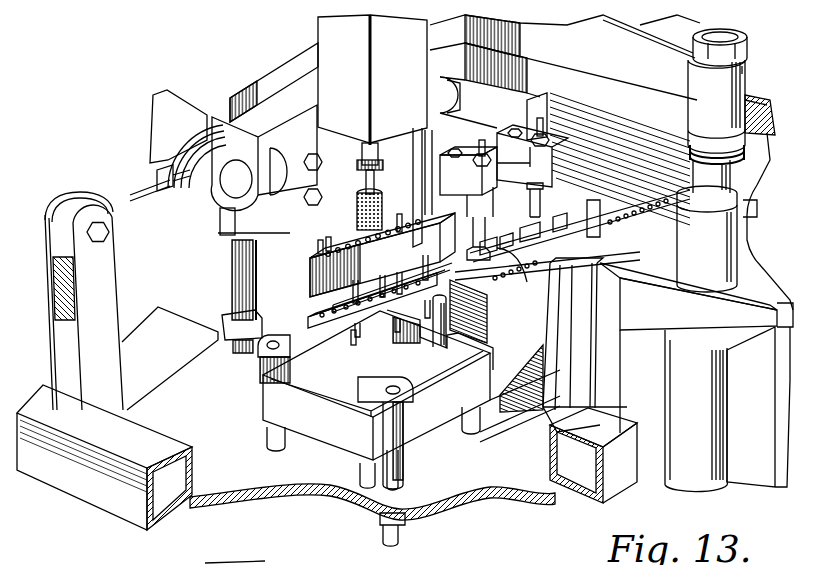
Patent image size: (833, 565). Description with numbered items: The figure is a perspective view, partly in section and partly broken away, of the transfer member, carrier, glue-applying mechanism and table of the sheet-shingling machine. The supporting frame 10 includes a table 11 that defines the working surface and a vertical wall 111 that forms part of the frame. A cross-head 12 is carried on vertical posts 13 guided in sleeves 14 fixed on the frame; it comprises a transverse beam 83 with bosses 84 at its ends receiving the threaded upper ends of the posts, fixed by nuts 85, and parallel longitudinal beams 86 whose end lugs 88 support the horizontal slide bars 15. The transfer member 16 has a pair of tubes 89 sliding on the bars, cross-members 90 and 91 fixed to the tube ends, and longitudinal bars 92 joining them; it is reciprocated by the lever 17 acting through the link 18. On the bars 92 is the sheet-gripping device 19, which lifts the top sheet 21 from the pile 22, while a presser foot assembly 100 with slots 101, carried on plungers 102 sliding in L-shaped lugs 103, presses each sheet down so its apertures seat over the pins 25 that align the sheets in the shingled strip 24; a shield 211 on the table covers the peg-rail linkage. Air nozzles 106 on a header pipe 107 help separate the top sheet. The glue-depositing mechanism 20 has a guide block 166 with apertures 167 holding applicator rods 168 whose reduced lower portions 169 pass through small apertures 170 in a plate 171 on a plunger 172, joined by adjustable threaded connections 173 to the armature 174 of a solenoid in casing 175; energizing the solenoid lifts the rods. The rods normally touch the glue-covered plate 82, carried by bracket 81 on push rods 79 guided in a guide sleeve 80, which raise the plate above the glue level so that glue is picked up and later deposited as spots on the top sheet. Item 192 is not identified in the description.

The supporting frame 10 is at (755, 472).
The table 11 is at (748, 240).
The cross-head 12 is at (756, 65).
The vertical posts 13 is at (712, 181).
The sleeves 14 is at (680, 482).
The slide bars 15 is at (285, 164).
The transfer member 16 is at (472, 106).
The lever 17 is at (103, 269).
The link 18 is at (137, 190).
The sheet-gripping device 19 is at (566, 198).
The glue-depositing mechanism 20 is at (307, 250).
The sheet 21 is at (542, 243).
The pile 22 is at (537, 332).
The shingled strip 24 is at (636, 117).
The pins 25 is at (600, 225).
The push rods 79 is at (260, 437).
The guide sleeve 80 is at (380, 522).
The bracket 81 is at (258, 376).
The plate 82 is at (425, 386).
The transverse beam 83 is at (618, 80).
The bosses 84 is at (742, 84).
The nuts 85 is at (742, 34).
The longitudinal beams 86 is at (256, 97).
The lugs 88 is at (222, 192).
The tubes 89 is at (446, 91).
The cross-member 90 is at (527, 98).
The cross-member 91 is at (160, 116).
The longitudinal bars 92 is at (541, 169).
The presser foot assembly 100 is at (466, 240).
The slots 101 is at (524, 276).
The plungers 102 is at (533, 130).
The L-shaped lugs 103 is at (443, 165).
The air nozzles 106 is at (247, 259).
The header pipe 107 is at (228, 318).
The vertical wall 111 is at (601, 262).
The guide block 166 is at (320, 279).
The apertures 167 is at (327, 250).
The applicator rods 168 is at (399, 214).
The lower portion 169 is at (353, 338).
The small apertures 170 is at (322, 306).
The plate 171 is at (436, 278).
The plunger 172 is at (367, 288).
The adjustable threaded connections 173 is at (360, 203).
The armature 174 is at (377, 155).
The casing 175 is at (325, 33).
The plate 192 is at (512, 432).
The shield 211 is at (768, 168).